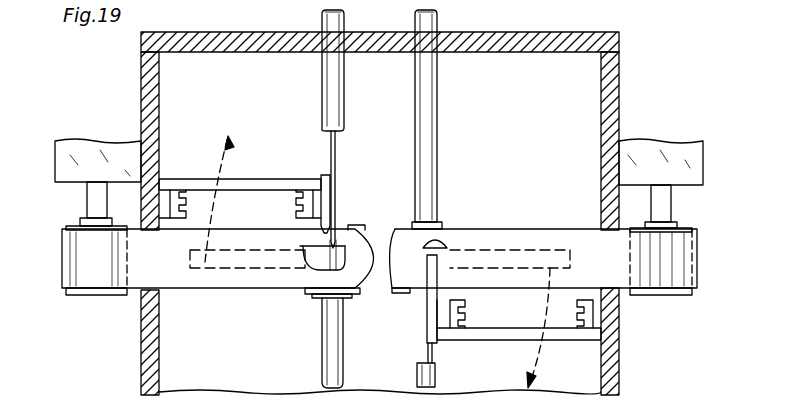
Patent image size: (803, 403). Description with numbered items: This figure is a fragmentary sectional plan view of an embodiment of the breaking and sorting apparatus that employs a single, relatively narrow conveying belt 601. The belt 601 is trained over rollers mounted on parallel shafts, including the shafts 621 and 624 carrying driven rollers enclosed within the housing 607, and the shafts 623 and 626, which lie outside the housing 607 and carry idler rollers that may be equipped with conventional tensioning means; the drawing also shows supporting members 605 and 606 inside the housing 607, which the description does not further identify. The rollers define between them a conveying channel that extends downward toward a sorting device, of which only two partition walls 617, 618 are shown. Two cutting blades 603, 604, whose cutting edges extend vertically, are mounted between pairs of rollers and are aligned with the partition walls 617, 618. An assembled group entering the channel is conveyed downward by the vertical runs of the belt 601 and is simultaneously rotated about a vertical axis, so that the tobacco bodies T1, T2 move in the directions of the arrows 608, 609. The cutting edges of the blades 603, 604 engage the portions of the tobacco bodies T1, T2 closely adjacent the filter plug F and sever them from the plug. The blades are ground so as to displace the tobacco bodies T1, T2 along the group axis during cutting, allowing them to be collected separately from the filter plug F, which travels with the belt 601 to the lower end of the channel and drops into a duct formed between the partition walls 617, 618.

The conveying belt 601 is at (478, 244).
The cutting blade 603 is at (332, 204).
The cutting blade 604 is at (433, 331).
The upper guide bracket 605 is at (273, 187).
The lower guide bracket 606 is at (568, 340).
The housing 607 is at (608, 117).
The arrow 608 is at (216, 162).
The arrow 609 is at (540, 353).
The partition wall 617 is at (335, 152).
The partition wall 618 is at (426, 350).
The shaft 621 is at (437, 108).
The shaft 623 is at (97, 208).
The shaft 624 is at (333, 89).
The shaft 626 is at (662, 206).
The tobacco body T1 is at (250, 290).
The tobacco body T2 is at (510, 250).
The filter plug F is at (344, 240).